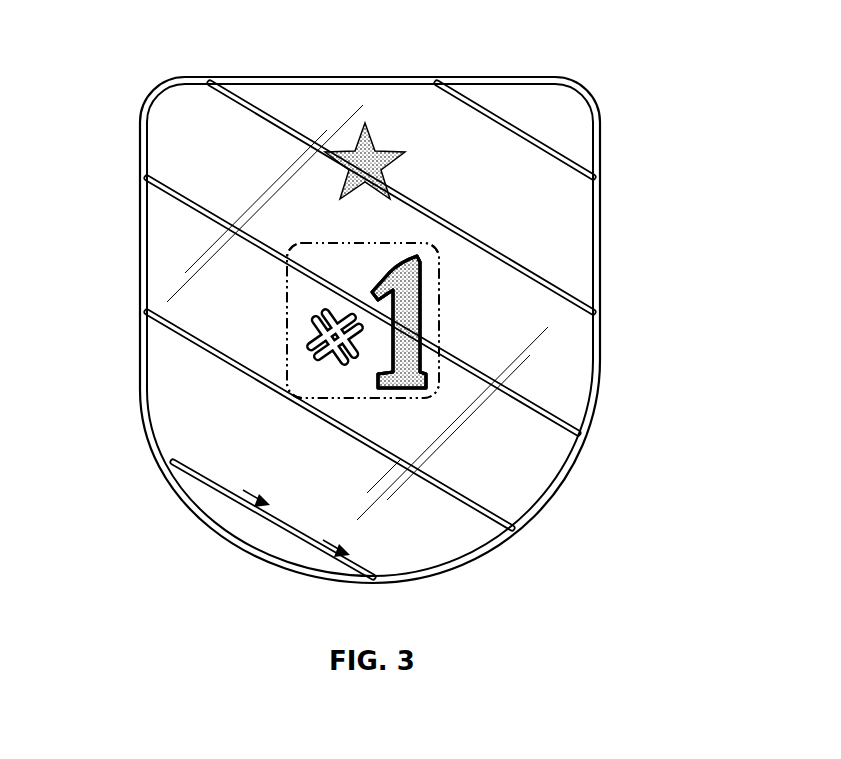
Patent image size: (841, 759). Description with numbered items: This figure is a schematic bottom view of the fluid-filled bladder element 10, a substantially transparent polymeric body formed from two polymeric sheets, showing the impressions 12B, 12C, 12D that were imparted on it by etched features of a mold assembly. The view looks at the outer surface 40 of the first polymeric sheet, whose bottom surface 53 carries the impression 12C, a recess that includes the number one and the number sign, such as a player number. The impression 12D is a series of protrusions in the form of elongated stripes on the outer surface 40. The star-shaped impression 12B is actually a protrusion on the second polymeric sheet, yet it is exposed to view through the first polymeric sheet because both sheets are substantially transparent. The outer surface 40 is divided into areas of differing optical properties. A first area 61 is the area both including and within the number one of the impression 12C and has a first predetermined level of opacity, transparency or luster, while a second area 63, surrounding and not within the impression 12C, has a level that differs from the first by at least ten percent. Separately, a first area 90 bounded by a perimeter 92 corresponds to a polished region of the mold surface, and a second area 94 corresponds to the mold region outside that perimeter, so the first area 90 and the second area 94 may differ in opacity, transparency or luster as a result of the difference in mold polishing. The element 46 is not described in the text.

The fluid-filled bladder element 10 is at (586, 38).
The impression 12B is at (380, 177).
The impression 12C is at (387, 328).
The impression 12D is at (573, 162).
The outer surface 40 is at (262, 505).
The bottom surface 53 is at (343, 555).
The numeral indicia 46 is at (420, 340).
The first area 61 is at (420, 372).
The second area 63 is at (573, 342).
The first area 90 is at (367, 262).
The perimeter 92 is at (280, 300).
The second area 94 is at (158, 253).